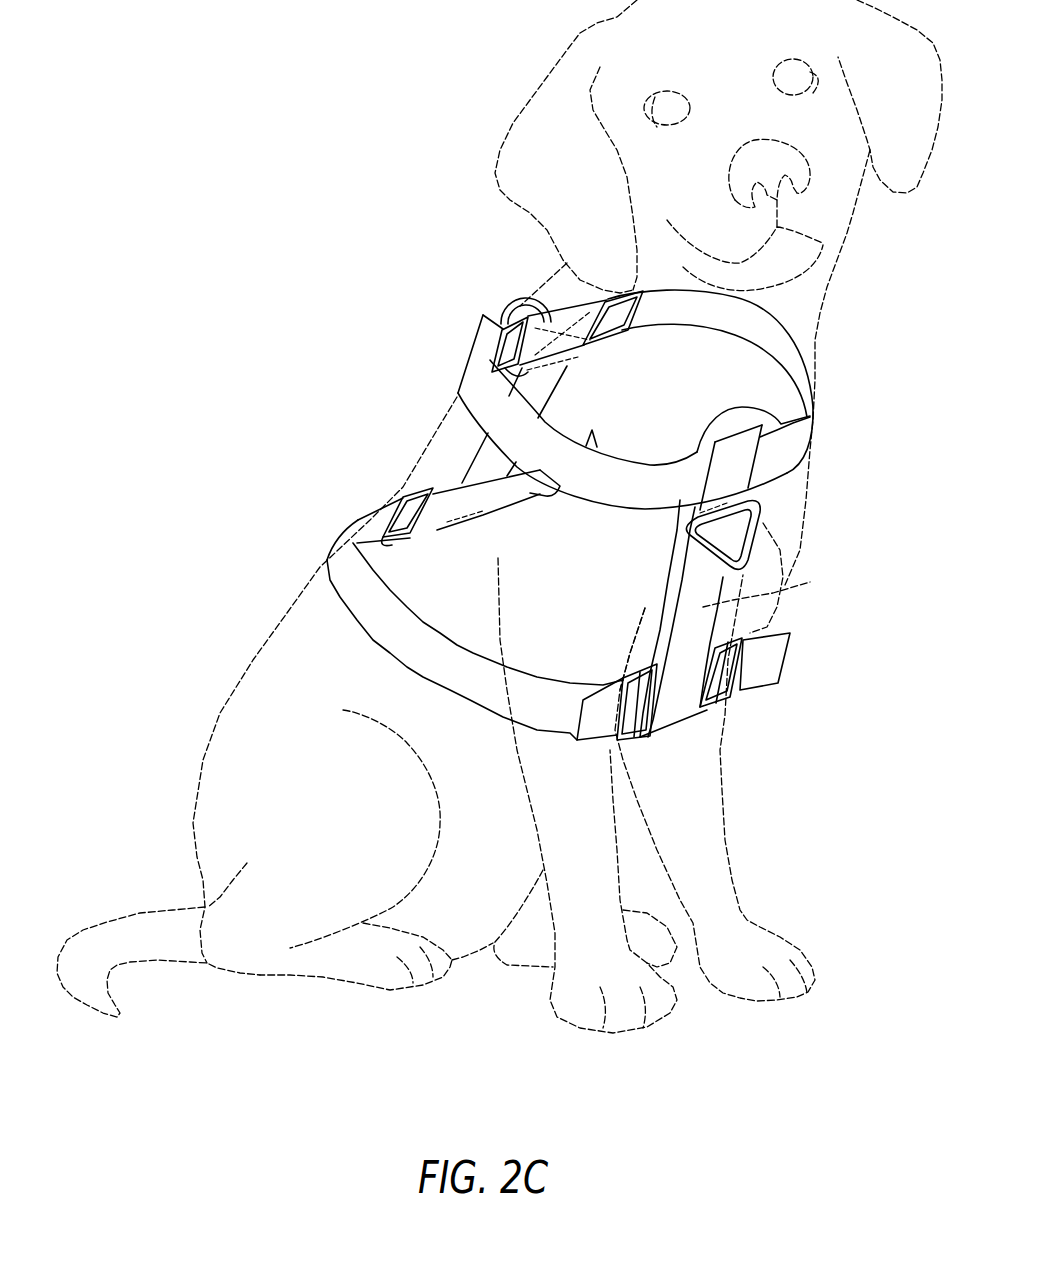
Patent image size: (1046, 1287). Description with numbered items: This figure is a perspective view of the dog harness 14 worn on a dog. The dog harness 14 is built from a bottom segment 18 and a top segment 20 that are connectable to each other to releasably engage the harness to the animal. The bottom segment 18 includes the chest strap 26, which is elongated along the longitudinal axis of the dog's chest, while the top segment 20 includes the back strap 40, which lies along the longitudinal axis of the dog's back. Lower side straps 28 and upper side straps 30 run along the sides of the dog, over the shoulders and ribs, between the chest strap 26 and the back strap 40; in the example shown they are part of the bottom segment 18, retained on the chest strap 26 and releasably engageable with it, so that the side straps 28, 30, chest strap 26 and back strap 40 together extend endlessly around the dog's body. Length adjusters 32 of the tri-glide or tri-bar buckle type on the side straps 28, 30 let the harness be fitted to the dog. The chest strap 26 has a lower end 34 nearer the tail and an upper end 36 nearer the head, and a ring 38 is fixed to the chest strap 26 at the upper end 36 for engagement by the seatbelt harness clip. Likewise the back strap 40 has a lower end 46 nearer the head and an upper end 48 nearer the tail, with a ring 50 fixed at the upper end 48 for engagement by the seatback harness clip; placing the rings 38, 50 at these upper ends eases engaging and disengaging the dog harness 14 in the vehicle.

The dog harness 14 is at (879, 422).
The bottom segment 18 is at (630, 620).
The top segment 20 is at (402, 391).
The chest strap 26 is at (700, 607).
The lower side straps 28 is at (787, 343).
The upper side straps 30 is at (380, 647).
The length adjusters 32 is at (602, 758).
The lower end 34 is at (671, 751).
The upper end 36 is at (720, 400).
The ring 38 is at (767, 543).
The back strap 40 is at (560, 389).
The lower end 46 is at (462, 535).
The upper end 48 is at (566, 297).
The ring 50 is at (510, 318).